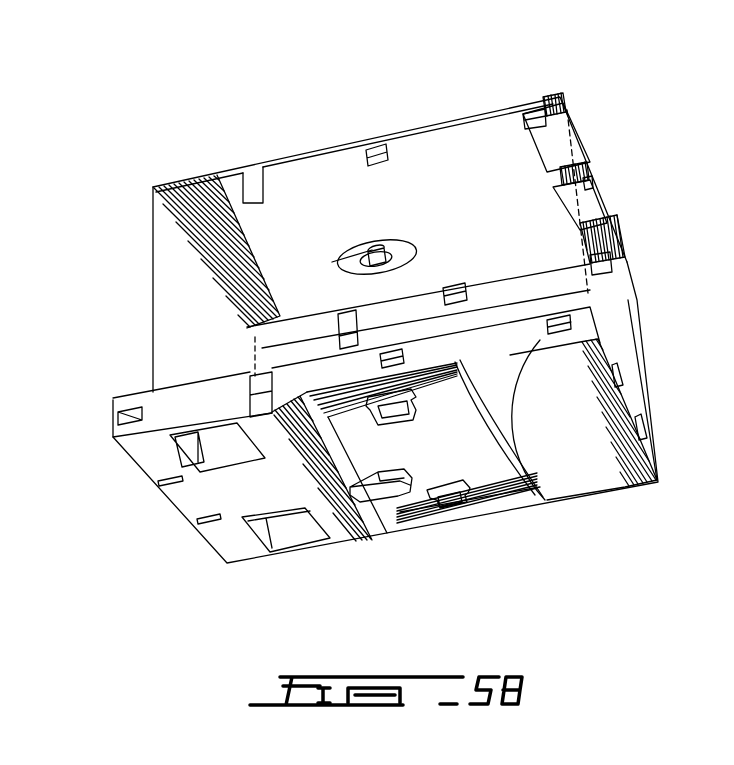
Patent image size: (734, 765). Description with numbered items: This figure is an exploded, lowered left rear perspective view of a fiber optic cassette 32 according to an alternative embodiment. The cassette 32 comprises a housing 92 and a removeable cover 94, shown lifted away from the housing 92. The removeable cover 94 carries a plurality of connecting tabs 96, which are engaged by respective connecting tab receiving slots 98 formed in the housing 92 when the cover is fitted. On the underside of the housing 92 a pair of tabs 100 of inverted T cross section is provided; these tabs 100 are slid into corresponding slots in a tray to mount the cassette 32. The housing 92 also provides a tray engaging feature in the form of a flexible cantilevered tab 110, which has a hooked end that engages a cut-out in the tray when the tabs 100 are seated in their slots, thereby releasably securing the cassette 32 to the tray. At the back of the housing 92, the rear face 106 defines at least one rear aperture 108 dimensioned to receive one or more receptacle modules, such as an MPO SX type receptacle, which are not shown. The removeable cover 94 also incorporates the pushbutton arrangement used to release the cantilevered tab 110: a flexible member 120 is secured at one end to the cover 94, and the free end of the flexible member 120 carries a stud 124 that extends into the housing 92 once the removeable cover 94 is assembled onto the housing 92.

The cassette 32 is at (141, 234).
The removeable cover 94 is at (318, 152).
The flexible member 120 is at (345, 247).
The stud 124 is at (385, 258).
The connecting tabs 96 is at (338, 322).
The connecting tab receiving slots 98 is at (248, 395).
The tabs 100 is at (416, 425).
The flexible cantilevered tab 110 is at (388, 488).
The housing 92 is at (575, 470).
The rear aperture 108 is at (603, 352).
The rear face 106 is at (658, 448).